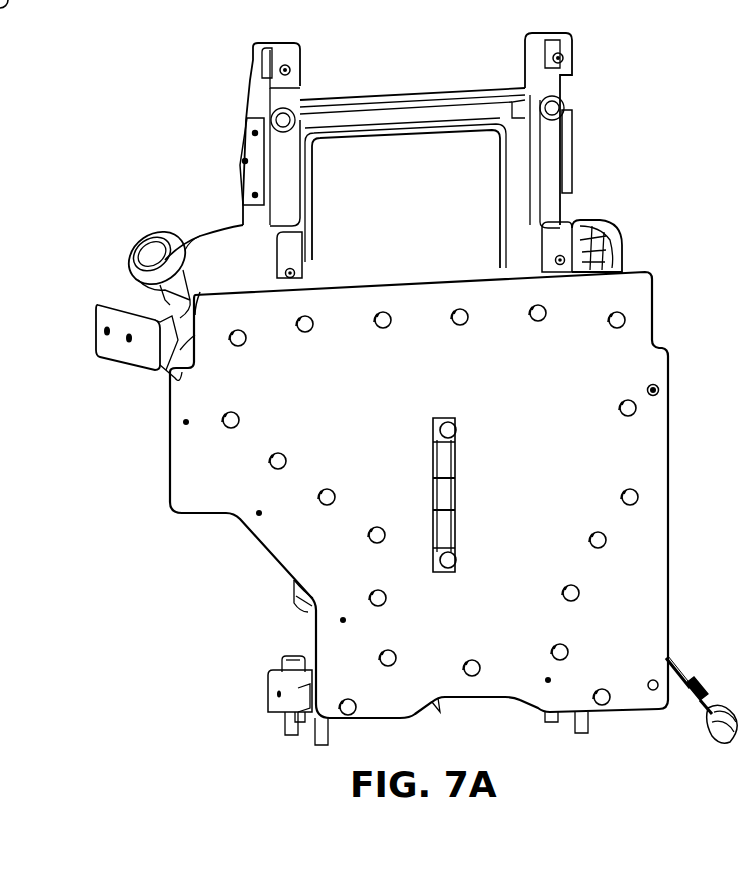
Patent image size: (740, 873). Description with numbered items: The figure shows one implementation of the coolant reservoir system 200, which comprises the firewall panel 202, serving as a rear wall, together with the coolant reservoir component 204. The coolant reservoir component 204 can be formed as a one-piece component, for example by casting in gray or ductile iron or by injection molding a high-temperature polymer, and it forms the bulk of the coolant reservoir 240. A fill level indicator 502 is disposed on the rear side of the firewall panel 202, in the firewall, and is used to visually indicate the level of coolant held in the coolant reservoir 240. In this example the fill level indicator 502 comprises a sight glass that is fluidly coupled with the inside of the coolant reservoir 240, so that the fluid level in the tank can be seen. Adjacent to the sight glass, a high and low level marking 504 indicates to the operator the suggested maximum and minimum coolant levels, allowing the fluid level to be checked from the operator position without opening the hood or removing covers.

The coolant reservoir system 200 is at (211, 82).
The firewall panel 202 is at (652, 663).
The coolant reservoir component 204 is at (739, 72).
The coolant reservoir 240 is at (252, 560).
The fill level indicator 502 is at (443, 462).
The high and low level marking 504 is at (355, 522).